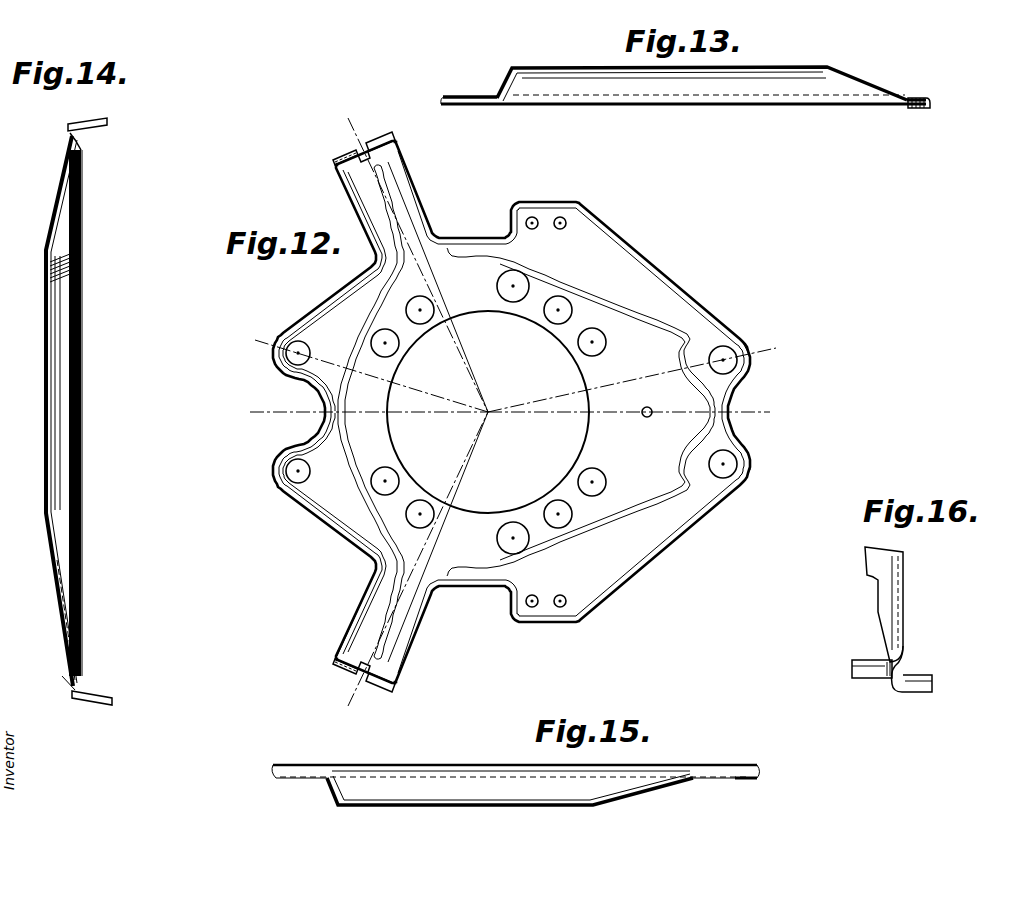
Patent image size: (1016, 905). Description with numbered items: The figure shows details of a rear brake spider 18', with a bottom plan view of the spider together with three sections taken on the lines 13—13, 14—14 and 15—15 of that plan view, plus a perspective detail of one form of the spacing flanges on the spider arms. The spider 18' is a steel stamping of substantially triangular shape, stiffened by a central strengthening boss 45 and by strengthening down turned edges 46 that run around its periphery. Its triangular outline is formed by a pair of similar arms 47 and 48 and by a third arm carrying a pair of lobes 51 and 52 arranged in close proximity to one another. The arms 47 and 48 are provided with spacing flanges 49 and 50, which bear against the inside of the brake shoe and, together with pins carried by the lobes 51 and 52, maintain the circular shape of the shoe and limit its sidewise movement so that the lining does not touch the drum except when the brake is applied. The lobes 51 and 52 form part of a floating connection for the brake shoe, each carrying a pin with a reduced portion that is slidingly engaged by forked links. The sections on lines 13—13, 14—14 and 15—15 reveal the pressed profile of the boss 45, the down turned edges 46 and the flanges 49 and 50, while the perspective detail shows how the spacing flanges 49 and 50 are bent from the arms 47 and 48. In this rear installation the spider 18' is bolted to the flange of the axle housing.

In FIG. 12, the section line 13— 13 is at (757, 398).
In FIG. 12, the section line 14— 14 is at (370, 128).
In FIG. 12, the section line 15— 15 is at (300, 396).
In FIG. 12, the rear spider 18' is at (511, 412).
In FIG. 13, the rear spider 18' is at (709, 107).
In FIG. 15, the rear spider 18' is at (515, 766).
In FIG. 14, the rear spider 18' is at (97, 467).
In FIG. 12, the central strengthening boss 45 is at (530, 302).
In FIG. 13, the central strengthening boss 45 is at (815, 59).
In FIG. 15, the central strengthening boss 45 is at (623, 799).
In FIG. 14, the central strengthening boss 45 is at (43, 288).
In FIG. 12, the strengthening down turned edges 46 is at (707, 310).
In FIG. 13, the strengthening down turned edges 46 is at (906, 108).
In FIG. 15, the strengthening down turned edges 46 is at (758, 768).
In FIG. 14, the strengthening down turned edges 46 is at (85, 296).
In FIG. 16, the strengthening down turned edges 46 is at (905, 596).
In FIG. 12, the arm 47 is at (361, 624).
In FIG. 14, the arm 47 is at (72, 695).
In FIG. 16, the arm 47 is at (889, 610).
In FIG. 12, the arm 48 is at (411, 171).
In FIG. 14, the arm 48 is at (67, 130).
In FIG. 12, the spacing flange 49 is at (388, 139).
In FIG. 14, the spacing flange 49 is at (107, 122).
In FIG. 16, the spacing flange 49 is at (917, 692).
In FIG. 12, the spacing flange 50 is at (349, 160).
In FIG. 16, the spacing flange 50 is at (863, 681).
In FIG. 12, the lobe 51 is at (743, 337).
In FIG. 15, the lobe 51 is at (761, 782).
In FIG. 12, the lobe 52 is at (754, 468).
In FIG. 13, the lobe 52 is at (921, 97).